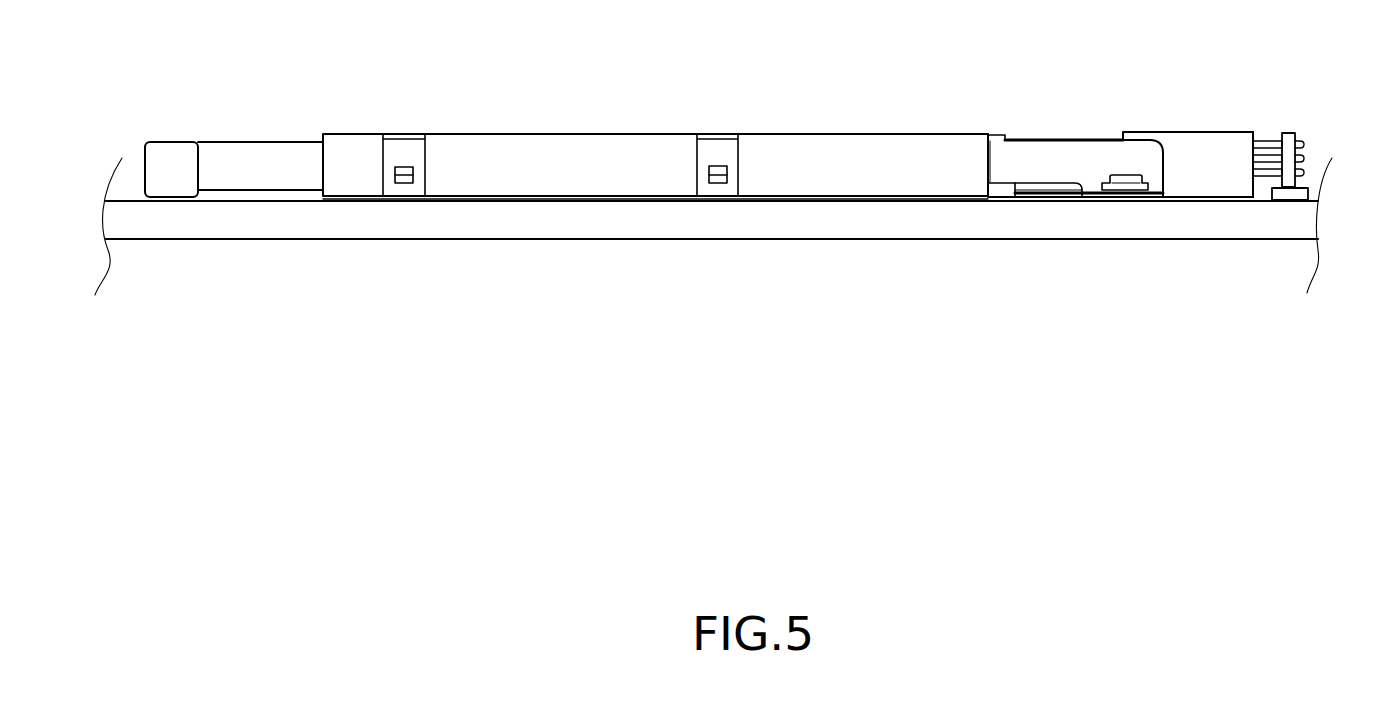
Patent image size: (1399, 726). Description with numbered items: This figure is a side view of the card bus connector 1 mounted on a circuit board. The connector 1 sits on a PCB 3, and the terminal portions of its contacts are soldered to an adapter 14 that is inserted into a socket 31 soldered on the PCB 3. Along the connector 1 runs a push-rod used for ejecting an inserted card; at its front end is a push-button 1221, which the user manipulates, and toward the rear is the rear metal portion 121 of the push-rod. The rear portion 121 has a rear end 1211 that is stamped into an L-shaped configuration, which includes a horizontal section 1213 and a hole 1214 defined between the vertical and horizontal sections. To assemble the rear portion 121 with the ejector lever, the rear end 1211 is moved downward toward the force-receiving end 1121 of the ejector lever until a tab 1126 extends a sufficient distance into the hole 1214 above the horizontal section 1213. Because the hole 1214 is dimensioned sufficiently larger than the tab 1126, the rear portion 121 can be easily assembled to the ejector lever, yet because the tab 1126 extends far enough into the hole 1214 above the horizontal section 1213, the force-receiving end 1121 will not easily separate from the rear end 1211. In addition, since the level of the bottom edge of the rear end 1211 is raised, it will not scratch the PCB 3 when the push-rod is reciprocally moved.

The card bus connector 1 is at (866, 128).
The PCB 3 is at (885, 232).
The socket 31 is at (1295, 195).
The adapter 14 is at (1290, 143).
The rear metal portion of the push-rod 121 is at (1115, 138).
The force-receiving end of the ejector lever 1121 is at (1125, 180).
The tab 1126 is at (1138, 182).
The horizontal section 1213 is at (1155, 187).
The rear end of the rear portion of the push-rod 1211 is at (1083, 165).
The hole 1214 is at (1098, 197).
The push-button 1221 is at (168, 156).